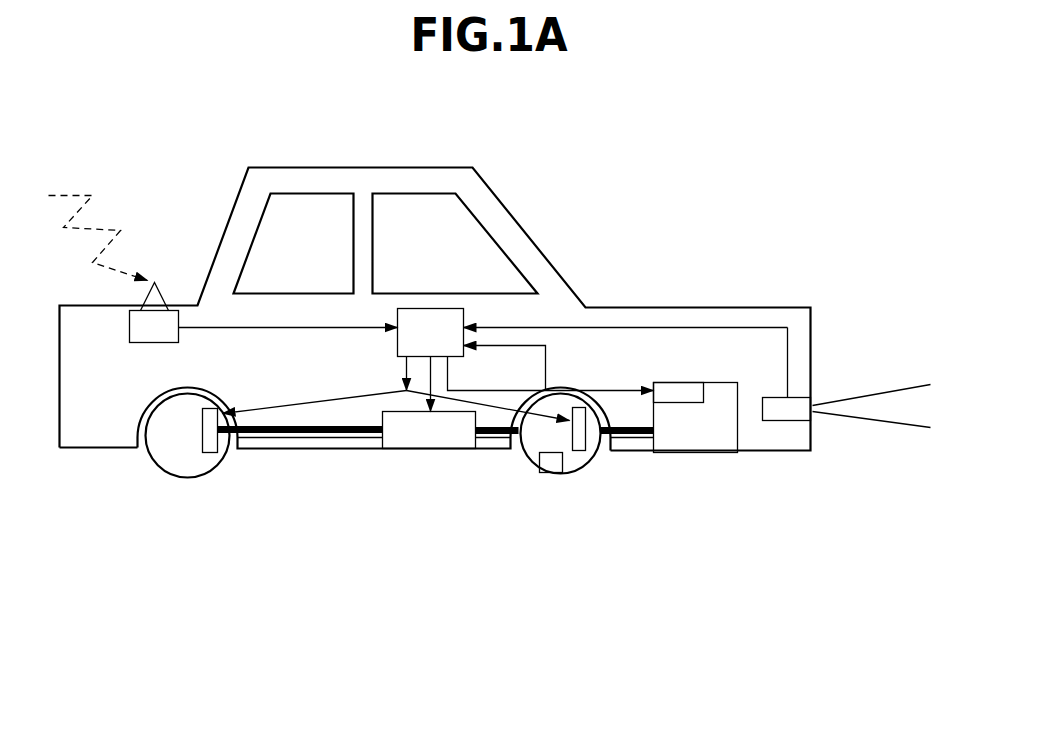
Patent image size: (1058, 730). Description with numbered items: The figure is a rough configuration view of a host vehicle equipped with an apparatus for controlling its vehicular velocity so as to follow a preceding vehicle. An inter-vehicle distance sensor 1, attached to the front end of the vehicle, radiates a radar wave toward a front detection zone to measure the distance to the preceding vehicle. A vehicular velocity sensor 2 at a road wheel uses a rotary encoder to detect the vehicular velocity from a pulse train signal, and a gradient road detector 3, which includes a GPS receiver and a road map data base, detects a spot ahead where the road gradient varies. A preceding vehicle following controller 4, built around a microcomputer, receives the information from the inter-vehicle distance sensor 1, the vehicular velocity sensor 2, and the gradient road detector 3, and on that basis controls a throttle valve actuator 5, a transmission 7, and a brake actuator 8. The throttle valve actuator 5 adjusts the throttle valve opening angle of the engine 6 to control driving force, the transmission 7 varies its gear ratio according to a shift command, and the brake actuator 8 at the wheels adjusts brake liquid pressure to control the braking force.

The inter-vehicle distance sensor 1 is at (787, 420).
The vehicular velocity sensor 2 is at (547, 465).
The gradient road detector 3 is at (163, 323).
The preceding vehicle following controller 4 is at (443, 318).
The throttle valve actuator 5 is at (678, 393).
The engine 6 is at (718, 435).
The transmission 7 is at (433, 432).
The brake actuator 8 is at (210, 453).